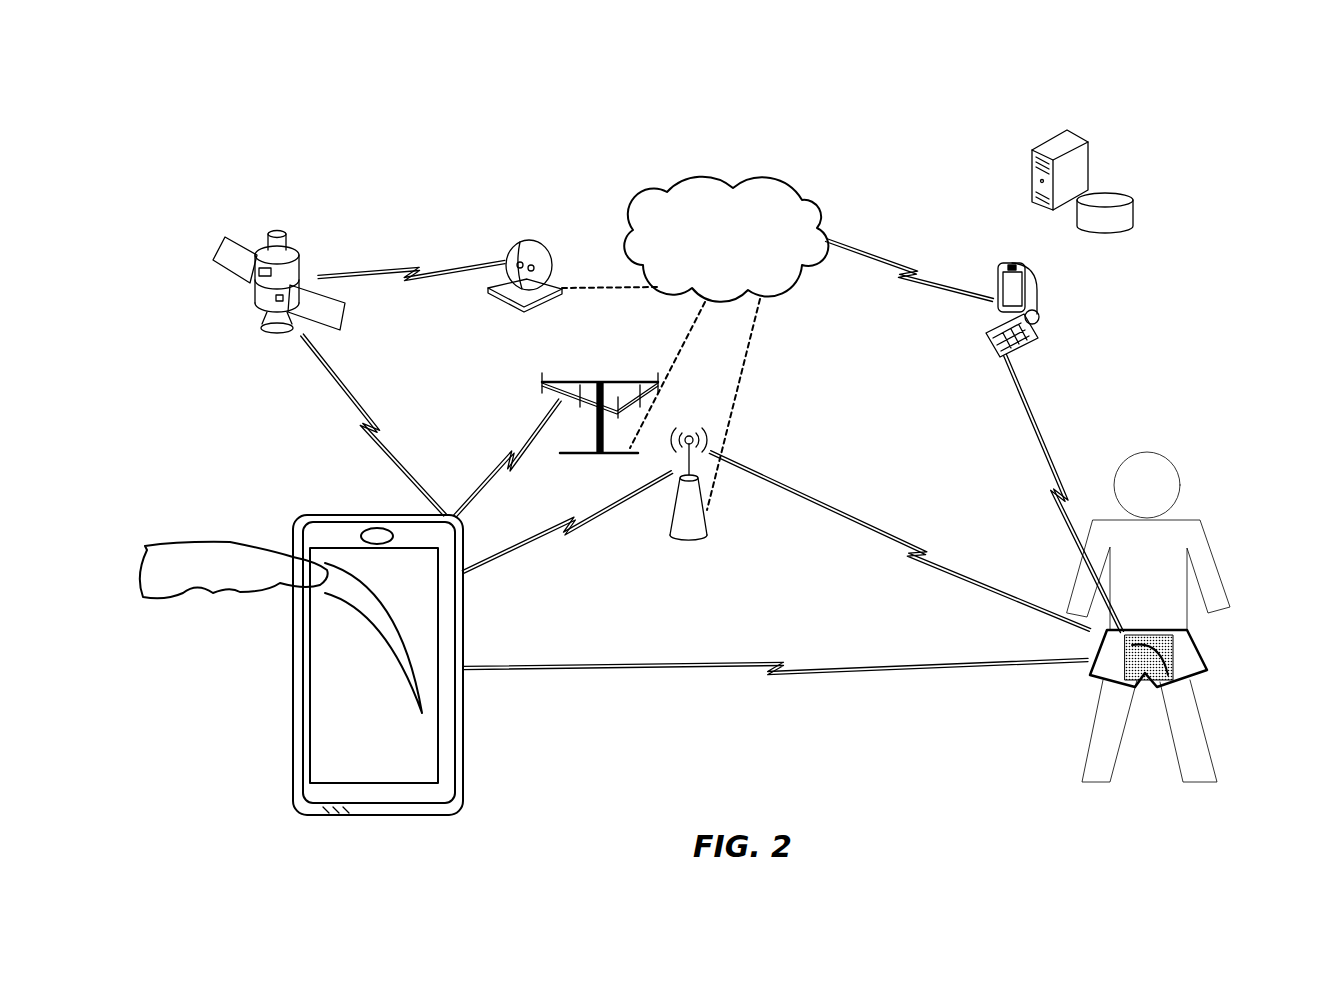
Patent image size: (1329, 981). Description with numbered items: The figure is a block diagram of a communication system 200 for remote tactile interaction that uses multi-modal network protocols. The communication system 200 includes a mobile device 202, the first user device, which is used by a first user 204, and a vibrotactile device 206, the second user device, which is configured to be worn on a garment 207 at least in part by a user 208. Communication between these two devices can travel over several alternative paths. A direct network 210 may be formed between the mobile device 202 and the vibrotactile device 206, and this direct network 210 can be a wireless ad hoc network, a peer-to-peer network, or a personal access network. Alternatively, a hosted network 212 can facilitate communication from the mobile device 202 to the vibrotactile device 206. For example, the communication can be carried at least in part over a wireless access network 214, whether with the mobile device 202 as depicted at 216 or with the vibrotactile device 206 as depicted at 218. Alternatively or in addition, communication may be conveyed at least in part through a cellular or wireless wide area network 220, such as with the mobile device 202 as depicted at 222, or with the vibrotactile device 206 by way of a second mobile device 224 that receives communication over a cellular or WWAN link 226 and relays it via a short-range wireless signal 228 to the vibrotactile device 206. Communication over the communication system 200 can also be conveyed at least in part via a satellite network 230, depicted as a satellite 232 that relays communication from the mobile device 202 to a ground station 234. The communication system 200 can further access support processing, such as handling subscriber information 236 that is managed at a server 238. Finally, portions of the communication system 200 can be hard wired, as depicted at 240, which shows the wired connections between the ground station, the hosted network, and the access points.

The communication system 200 is at (818, 127).
The mobile device 202 is at (465, 665).
The first user 204 is at (213, 538).
The vibrotactile device 206 is at (1176, 656).
The garment 207 is at (1208, 658).
The user 208 is at (1212, 530).
The direct network 210 is at (723, 657).
The hosted network 212 is at (700, 178).
The wireless access network (WLAN) 214 is at (708, 516).
The WLAN communication with mobile device 216 is at (592, 523).
The WLAN communication with vibrotactile device 218 is at (866, 520).
The cellular or Wireless Wide Area Network (WWAN) 220 is at (600, 381).
The WWAN communication with mobile device 222 is at (492, 450).
The second mobile device 224 is at (996, 350).
The cellular or WWAN link 226 is at (948, 289).
The short-range wireless signal 228 is at (1048, 452).
The satellite network 230 is at (413, 266).
The satellite 232 is at (300, 250).
The ground station 234 is at (533, 241).
The subscriber information 236 is at (1135, 197).
The server 238 is at (1088, 147).
The hard wired portion 240 is at (676, 301).